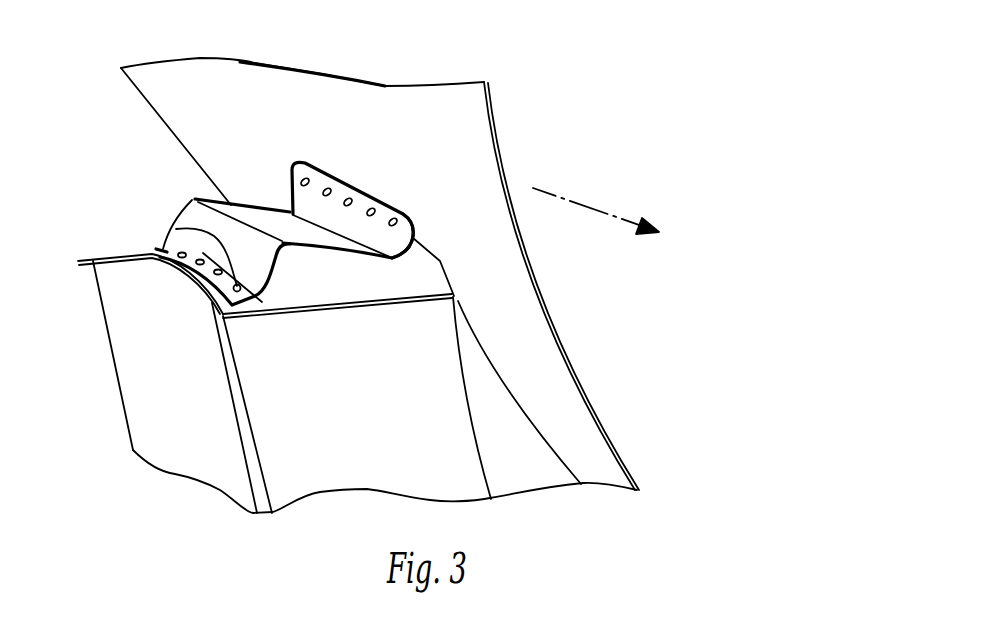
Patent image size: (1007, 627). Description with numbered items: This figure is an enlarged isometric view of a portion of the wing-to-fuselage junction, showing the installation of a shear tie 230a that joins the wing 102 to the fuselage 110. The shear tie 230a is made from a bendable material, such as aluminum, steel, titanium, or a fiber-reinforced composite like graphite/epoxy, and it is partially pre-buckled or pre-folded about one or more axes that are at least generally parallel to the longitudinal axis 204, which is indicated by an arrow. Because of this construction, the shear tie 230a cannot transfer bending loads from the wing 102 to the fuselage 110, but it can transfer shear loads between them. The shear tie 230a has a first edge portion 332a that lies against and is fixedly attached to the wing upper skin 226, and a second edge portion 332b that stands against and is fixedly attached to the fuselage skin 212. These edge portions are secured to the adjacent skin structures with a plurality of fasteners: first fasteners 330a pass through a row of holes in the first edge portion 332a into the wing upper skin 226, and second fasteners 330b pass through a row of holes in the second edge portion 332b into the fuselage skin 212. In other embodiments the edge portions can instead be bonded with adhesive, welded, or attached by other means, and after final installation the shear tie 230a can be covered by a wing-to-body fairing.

The wing 102 is at (103, 317).
The fuselage 110 is at (450, 88).
The longitudinal axis 204 is at (583, 204).
The fuselage skin 212 is at (275, 142).
The wing upper skin 226 is at (345, 292).
The shear tie 230a is at (191, 201).
The first fasteners 330a is at (182, 254).
The second fasteners 330b is at (392, 219).
The first edge portion 332a is at (262, 302).
The second edge portion 332b is at (413, 220).